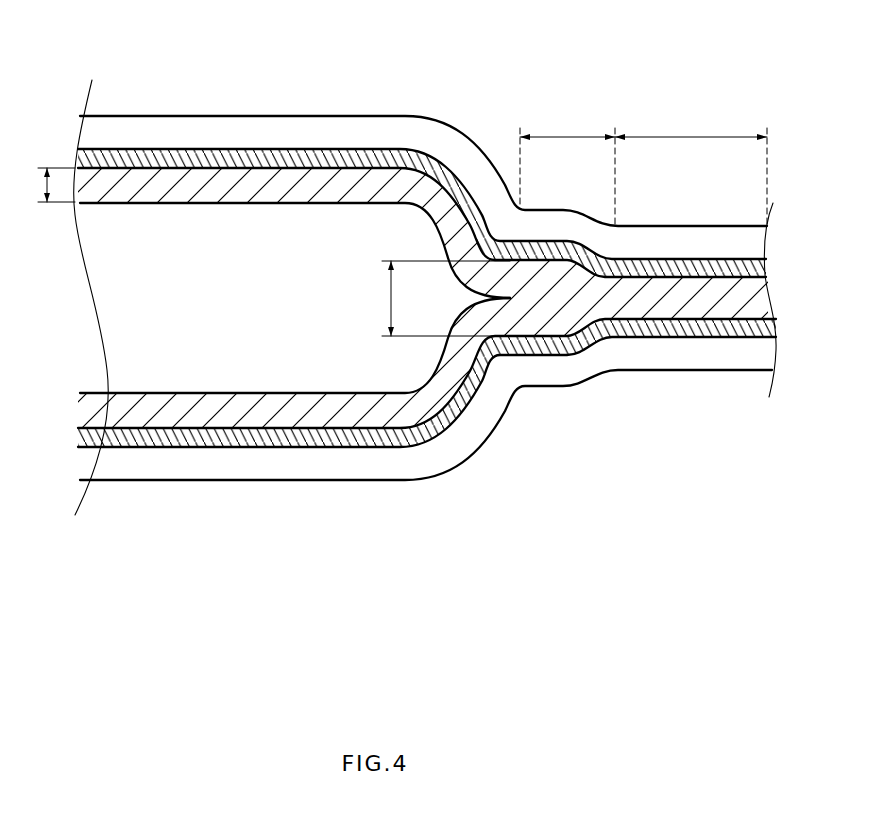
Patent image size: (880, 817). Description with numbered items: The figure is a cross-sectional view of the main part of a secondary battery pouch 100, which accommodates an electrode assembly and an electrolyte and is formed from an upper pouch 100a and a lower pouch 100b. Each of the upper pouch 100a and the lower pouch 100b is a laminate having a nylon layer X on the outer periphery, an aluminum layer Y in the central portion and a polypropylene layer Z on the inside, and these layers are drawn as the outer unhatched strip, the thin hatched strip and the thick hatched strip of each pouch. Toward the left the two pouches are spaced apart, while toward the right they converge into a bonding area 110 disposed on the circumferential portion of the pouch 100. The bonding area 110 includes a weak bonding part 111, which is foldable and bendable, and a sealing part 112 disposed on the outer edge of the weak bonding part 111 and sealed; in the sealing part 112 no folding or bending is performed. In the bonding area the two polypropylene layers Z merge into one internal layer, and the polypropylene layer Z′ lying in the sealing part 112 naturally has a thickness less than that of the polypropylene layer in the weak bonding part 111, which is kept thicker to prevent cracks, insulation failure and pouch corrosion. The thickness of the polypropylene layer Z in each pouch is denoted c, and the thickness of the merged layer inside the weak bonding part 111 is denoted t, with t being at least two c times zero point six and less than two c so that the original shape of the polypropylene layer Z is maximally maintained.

The pouch 100 is at (399, 284).
The upper pouch 100a is at (393, 131).
The lower pouch 100b is at (243, 482).
The bonding area 110 is at (643, 138).
The weak bonding part 111 is at (567, 124).
The sealing part 112 is at (691, 124).
The nylon layer X is at (87, 129).
The aluminum layer Y is at (80, 156).
The polypropylene layer Z is at (396, 308).
The polypropylene layer of the portion outside the bonding area Z′ is at (693, 305).
The thickness of the polypropylene layer c is at (50, 185).
The thickness of the polypropylene layer inside the weak bonding part t is at (439, 298).